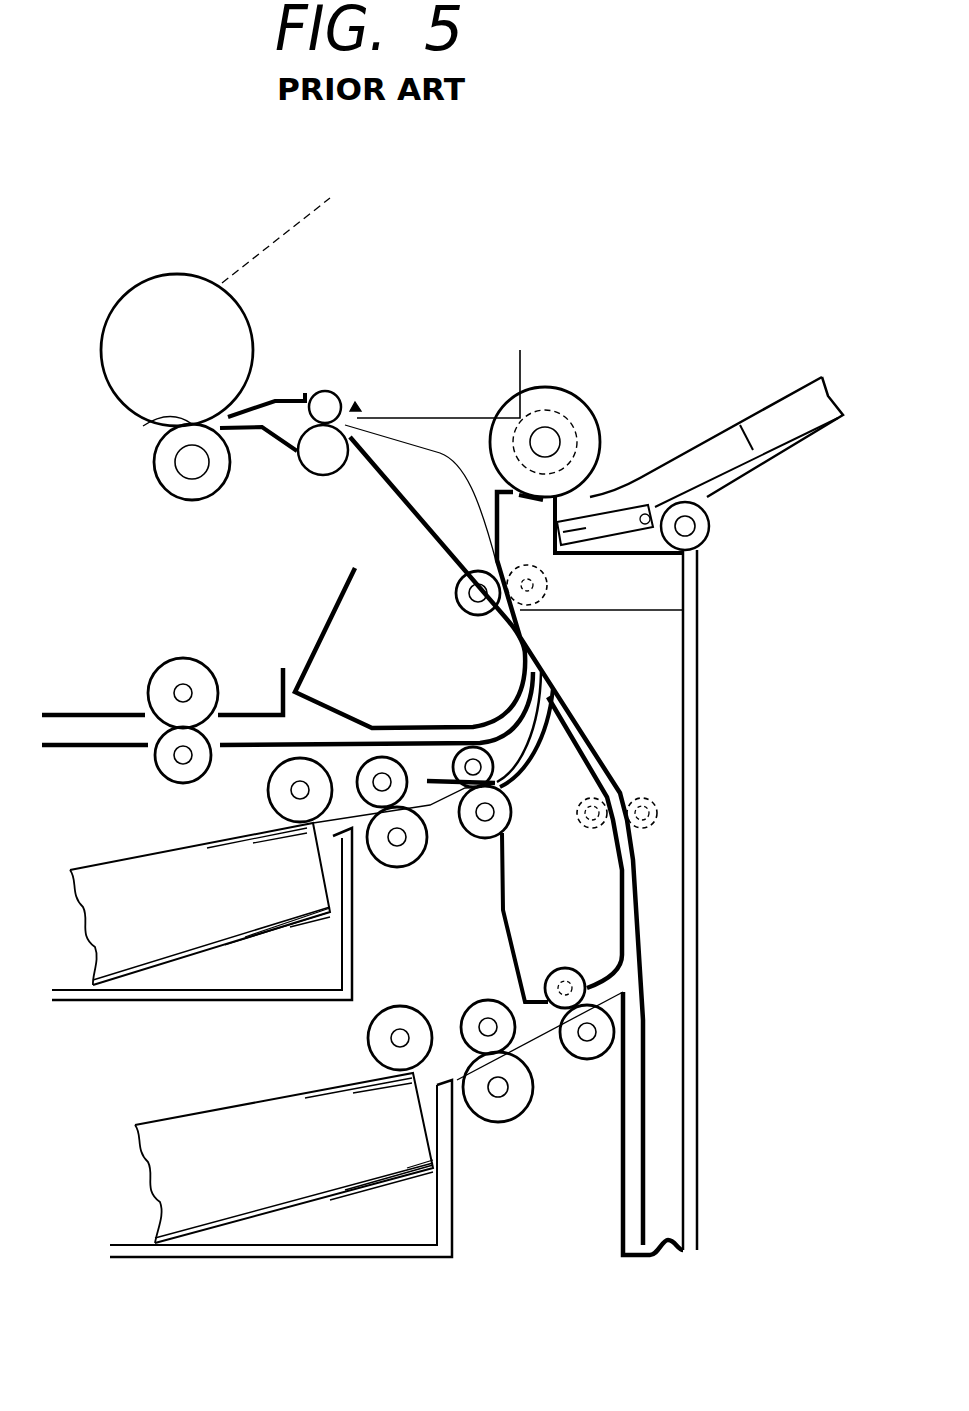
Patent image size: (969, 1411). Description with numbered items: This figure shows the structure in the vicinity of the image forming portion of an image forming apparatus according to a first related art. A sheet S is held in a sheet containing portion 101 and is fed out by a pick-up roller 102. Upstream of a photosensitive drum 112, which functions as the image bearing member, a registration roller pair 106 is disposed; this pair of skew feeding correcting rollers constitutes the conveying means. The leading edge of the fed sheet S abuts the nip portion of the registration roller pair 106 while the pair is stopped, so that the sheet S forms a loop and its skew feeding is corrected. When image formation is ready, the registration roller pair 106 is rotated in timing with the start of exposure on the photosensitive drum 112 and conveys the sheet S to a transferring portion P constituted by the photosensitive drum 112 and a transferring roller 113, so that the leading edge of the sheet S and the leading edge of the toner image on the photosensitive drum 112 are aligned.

The photosensitive drum 112 is at (177, 275).
The transferring roller 113 is at (183, 498).
The transferring portion P is at (143, 424).
The registration roller pair 106 is at (310, 472).
The sheet S is at (437, 450).
The pick-up roller 102 is at (593, 408).
The sheet containing portion 101 is at (750, 475).